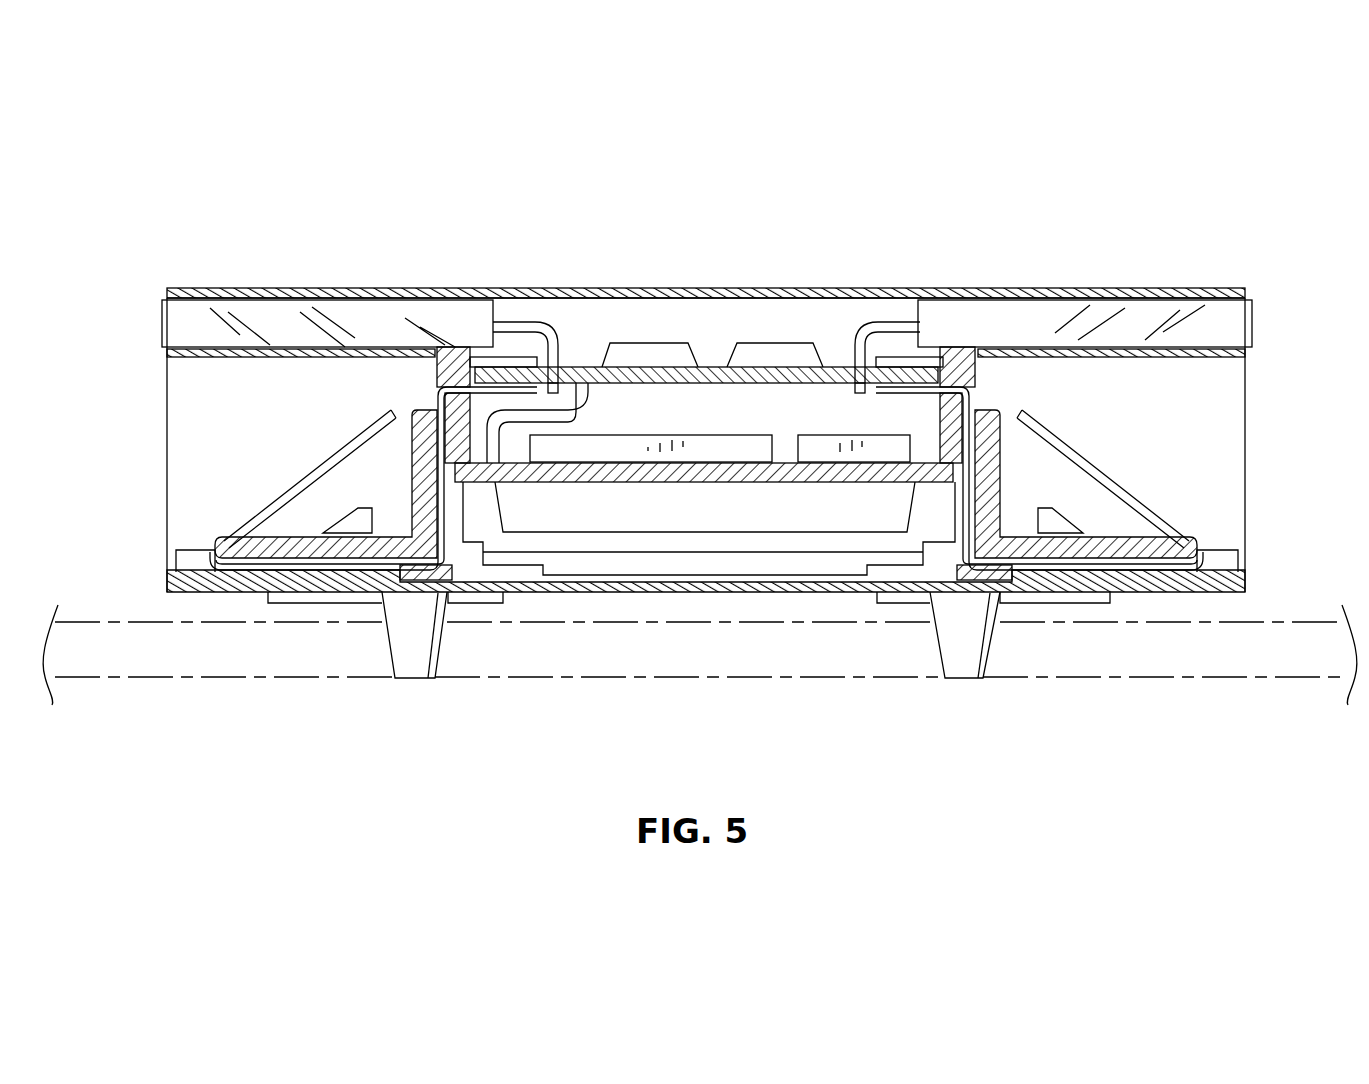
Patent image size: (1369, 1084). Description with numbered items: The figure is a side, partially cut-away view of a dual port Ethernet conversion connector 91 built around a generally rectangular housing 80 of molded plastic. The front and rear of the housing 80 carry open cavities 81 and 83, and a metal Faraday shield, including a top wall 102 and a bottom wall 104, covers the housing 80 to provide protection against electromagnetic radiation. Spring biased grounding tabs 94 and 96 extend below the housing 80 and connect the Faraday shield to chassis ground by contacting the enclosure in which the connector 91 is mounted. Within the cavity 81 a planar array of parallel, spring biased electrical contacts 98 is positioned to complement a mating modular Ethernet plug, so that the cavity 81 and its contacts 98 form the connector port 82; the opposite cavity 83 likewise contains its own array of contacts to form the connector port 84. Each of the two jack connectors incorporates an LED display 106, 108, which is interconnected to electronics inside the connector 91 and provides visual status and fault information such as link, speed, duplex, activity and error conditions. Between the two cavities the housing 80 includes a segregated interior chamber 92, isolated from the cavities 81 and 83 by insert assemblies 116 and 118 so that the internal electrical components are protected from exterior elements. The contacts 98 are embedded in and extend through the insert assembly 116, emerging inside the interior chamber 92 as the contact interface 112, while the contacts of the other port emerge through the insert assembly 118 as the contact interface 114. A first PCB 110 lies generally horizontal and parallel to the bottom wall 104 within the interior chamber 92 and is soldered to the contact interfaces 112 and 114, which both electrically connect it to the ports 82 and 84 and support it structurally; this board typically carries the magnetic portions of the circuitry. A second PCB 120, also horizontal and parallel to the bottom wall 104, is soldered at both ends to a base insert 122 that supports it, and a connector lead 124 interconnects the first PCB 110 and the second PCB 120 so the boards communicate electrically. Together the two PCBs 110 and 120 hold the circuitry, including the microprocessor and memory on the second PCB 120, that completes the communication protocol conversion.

The housing 80 is at (970, 290).
The open cavity 81 is at (188, 513).
The connector port 82 is at (180, 393).
The open cavity 83 is at (1225, 394).
The connector port 84 is at (1228, 497).
The connector 91 is at (1167, 262).
The interior chamber 92 is at (713, 310).
The grounding tab 94 is at (422, 673).
The grounding tab 96 is at (967, 665).
The electrical contacts 98 is at (303, 470).
The top wall 102 is at (337, 293).
The bottom wall 104 is at (587, 592).
The LED display 106 is at (138, 298).
The LED display 108 is at (1253, 323).
The first PCB 110 is at (778, 377).
The contact interface 112 is at (513, 387).
The contact interface 114 is at (891, 388).
The insert assembly 116 is at (410, 455).
The insert assembly 118 is at (1002, 450).
The second PCB 120 is at (817, 482).
The base insert 122 is at (723, 538).
The connector lead 124 is at (587, 407).